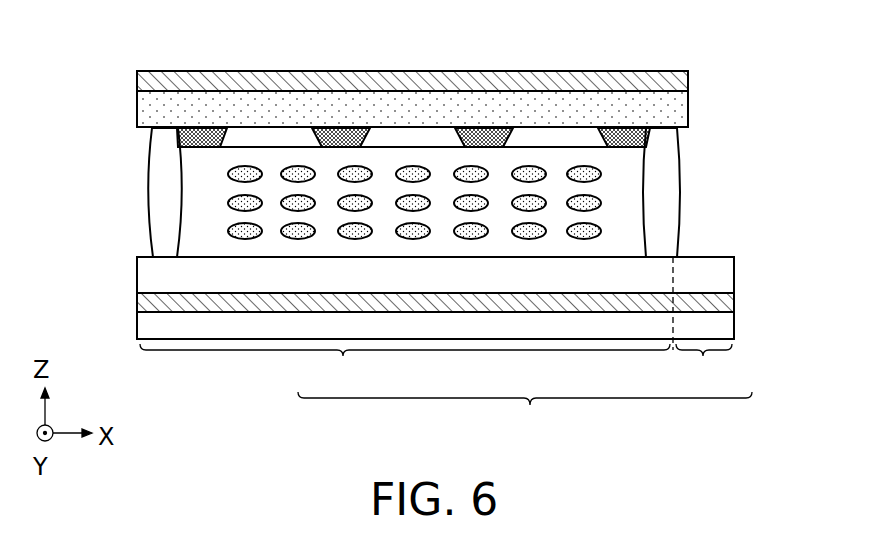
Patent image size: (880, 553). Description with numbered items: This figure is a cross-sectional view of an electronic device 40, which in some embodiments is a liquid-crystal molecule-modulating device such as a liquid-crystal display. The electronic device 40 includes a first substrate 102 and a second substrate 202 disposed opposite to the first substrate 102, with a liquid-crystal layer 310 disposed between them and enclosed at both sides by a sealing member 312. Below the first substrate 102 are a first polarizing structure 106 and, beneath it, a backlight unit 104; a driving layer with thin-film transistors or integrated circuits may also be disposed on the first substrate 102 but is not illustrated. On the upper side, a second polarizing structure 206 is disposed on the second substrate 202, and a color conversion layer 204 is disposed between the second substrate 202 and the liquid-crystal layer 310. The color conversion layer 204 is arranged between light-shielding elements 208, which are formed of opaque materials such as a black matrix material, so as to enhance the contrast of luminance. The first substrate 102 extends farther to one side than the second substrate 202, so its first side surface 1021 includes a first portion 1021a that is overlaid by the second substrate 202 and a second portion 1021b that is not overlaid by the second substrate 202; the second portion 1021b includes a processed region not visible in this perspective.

The electronic device 40 is at (65, 30).
The second polarizing structure 206 is at (140, 80).
The second substrate 202 is at (150, 110).
The color conversion layer 204 is at (268, 137).
The light-shielding element 208 is at (197, 127).
The sealing member 312 is at (155, 192).
The liquid-crystal layer 310 is at (592, 172).
The first substrate 102 is at (150, 277).
The first polarizing structure 106 is at (145, 303).
The backlight unit 104 is at (148, 324).
The first portion 1021a is at (405, 371).
The second portion 1021b is at (703, 371).
The first side surface 1021 is at (525, 418).